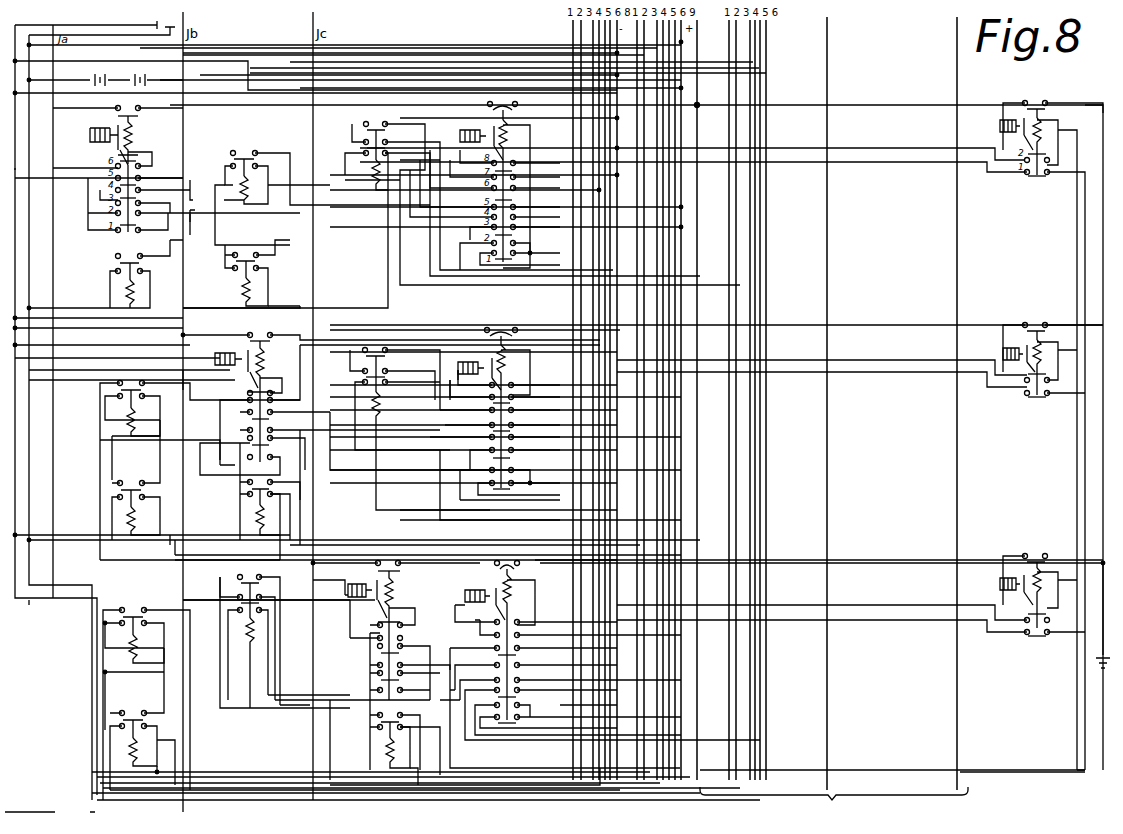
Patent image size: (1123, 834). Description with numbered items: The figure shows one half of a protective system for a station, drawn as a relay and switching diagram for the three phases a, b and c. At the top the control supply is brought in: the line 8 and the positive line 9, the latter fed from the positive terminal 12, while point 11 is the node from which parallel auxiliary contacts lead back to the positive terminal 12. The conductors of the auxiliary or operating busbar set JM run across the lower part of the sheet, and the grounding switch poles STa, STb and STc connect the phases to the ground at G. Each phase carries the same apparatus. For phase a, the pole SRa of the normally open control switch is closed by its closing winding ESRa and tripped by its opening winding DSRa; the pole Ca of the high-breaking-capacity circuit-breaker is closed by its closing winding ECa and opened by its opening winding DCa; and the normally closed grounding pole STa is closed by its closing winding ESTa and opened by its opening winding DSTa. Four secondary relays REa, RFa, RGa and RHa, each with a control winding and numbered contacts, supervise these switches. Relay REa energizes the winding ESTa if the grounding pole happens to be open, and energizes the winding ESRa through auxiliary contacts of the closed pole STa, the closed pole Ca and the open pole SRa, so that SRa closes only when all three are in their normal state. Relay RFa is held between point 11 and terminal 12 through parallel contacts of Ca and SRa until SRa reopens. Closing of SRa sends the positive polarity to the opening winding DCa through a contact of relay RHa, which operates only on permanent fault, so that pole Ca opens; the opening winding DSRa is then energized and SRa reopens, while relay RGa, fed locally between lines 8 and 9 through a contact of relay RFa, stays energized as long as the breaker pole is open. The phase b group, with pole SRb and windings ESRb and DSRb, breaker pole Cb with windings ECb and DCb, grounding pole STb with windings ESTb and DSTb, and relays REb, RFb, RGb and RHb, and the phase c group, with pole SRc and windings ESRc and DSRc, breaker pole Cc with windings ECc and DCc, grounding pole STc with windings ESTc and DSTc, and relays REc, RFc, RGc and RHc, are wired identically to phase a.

The line 8 is at (86, 20).
The positive line 9 is at (104, 29).
The point 11 is at (195, 215).
The positive terminal 12 is at (85, 80).
The pole of control switch SR SRa is at (128, 104).
The opening winding of pole SRa DSRa is at (95, 140).
The closing winding of pole SRa ESRa is at (144, 140).
The relay RG RGa is at (249, 172).
The relay RF RFa is at (238, 274).
The relay RE REa is at (133, 275).
The relay RH RHa is at (367, 150).
The pole of circuit-breaker C' Ca is at (503, 105).
The opening winding of pole C'a DCa is at (479, 136).
The closing winding of pole C'a ECa is at (519, 194).
The pole of grounding switch ST STa is at (1035, 102).
The opening winding of pole STa DSTa is at (997, 127).
The closing winding of pole STa ESTa is at (1050, 146).
The pole of control switch SR SRb is at (260, 333).
The opening winding of pole SRb DSRb is at (234, 363).
The closing winding of pole SRb ESRb is at (275, 366).
The relay RE REb is at (263, 508).
The relay RG RGb is at (132, 409).
The relay RF RFb is at (136, 511).
The relay RH RHb is at (369, 392).
The pole of circuit-breaker C' Cb is at (501, 331).
The opening winding of pole C'b DCb is at (478, 364).
The closing winding of pole C'b ECb is at (517, 370).
The pole of grounding switch ST STb is at (1035, 327).
The opening winding of pole STb DSTb is at (998, 351).
The closing winding of pole STb ESTb is at (1051, 367).
The pole of control switch SR SRc is at (388, 561).
The opening winding of pole SRc DSRc is at (354, 592).
The closing winding of pole SRc ESRc is at (404, 596).
The relay RE REc is at (392, 741).
The relay RG RGc is at (134, 636).
The relay RF RFc is at (135, 751).
The relay RH RHc is at (241, 617).
The pole of circuit-breaker C' Cc is at (507, 563).
The opening winding of pole C'c DCc is at (483, 596).
The closing winding of pole C'c ECc is at (522, 600).
The pole of grounding switch ST STc is at (1035, 557).
The opening winding of pole STc DSTc is at (997, 583).
The closing winding of pole STc ESTc is at (1049, 598).
The ground G is at (1103, 625).
The auxiliary or operating busbar set JM is at (834, 801).